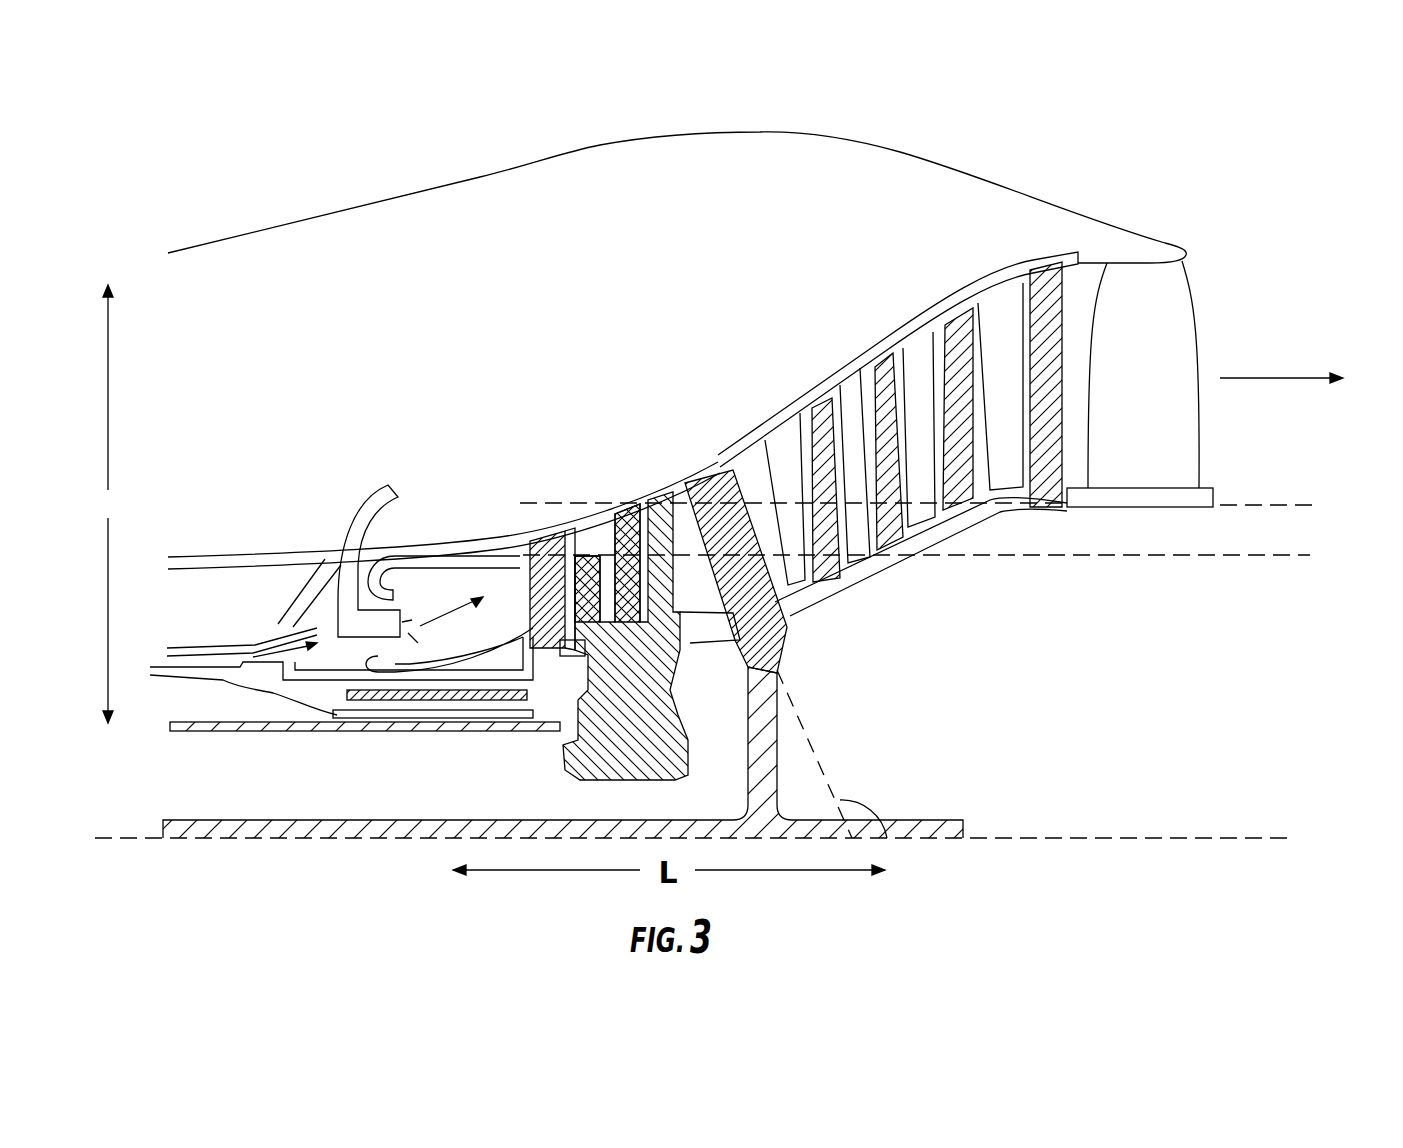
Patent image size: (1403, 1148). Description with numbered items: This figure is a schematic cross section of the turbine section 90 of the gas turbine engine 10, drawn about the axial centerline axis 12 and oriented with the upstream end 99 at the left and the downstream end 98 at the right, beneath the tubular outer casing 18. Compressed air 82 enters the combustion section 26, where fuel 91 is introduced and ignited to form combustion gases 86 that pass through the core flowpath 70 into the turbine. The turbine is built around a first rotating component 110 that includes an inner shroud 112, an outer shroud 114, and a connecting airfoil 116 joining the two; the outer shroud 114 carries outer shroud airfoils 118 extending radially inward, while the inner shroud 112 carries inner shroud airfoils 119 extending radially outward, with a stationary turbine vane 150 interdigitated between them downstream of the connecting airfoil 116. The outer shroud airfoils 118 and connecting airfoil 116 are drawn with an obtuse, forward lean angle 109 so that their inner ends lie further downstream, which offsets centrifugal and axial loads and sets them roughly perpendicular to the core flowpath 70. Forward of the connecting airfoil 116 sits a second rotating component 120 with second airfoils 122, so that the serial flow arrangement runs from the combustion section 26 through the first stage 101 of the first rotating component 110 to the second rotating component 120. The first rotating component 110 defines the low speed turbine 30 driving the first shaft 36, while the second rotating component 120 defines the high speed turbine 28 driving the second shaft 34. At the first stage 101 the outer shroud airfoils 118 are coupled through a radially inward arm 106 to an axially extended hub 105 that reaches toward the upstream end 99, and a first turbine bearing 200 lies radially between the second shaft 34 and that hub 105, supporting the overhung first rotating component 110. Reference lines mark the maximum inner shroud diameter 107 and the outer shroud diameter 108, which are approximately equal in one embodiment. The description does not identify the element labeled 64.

The gas turbine engine 10 is at (975, 90).
The axial centerline axis 12 is at (1150, 838).
The outer casing 18 is at (585, 167).
The combustion section 26 is at (430, 505).
The high speed turbine 28 is at (643, 708).
The low speed turbine 30 is at (1040, 503).
The second shaft 34 is at (515, 728).
The first shaft 36 is at (958, 828).
The bypass airflow passage 64 is at (328, 675).
The core flowpath 70 is at (753, 463).
The compressed air 82 is at (267, 653).
The combustion gases 86 is at (458, 614).
The turbine section 90 is at (750, 333).
The fuel 91 is at (410, 608).
The downstream end 98 is at (1264, 609).
The upstream end 99 is at (63, 600).
The first stage 101 is at (533, 580).
The axially extended hub 105 is at (340, 693).
The arm 106 is at (583, 665).
The maximum inner shroud diameter 107 is at (1296, 505).
The outer shroud diameter 108 is at (1310, 555).
The lean angle 109 is at (873, 807).
The first rotating component 110 is at (818, 595).
The inner shroud 112 is at (950, 523).
The outer shroud 114 is at (550, 545).
The connecting airfoil 116 is at (717, 515).
The outer shroud airfoils 118 is at (558, 583).
The inner shroud airfoils 119 is at (1045, 268).
The second rotating component 120 is at (660, 645).
The second airfoils 122 is at (642, 567).
The turbine vane 150 is at (780, 445).
The first turbine bearing 200 is at (356, 708).